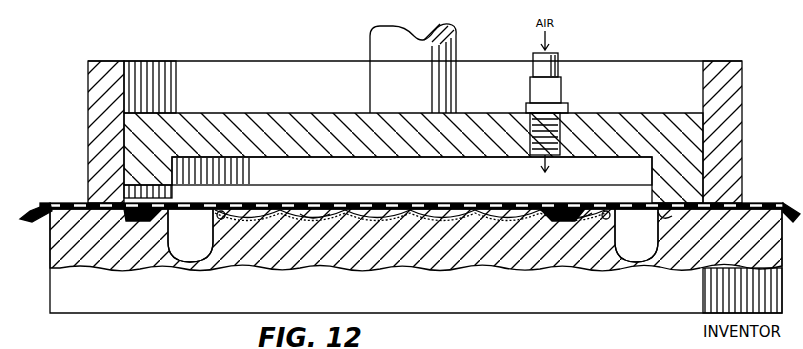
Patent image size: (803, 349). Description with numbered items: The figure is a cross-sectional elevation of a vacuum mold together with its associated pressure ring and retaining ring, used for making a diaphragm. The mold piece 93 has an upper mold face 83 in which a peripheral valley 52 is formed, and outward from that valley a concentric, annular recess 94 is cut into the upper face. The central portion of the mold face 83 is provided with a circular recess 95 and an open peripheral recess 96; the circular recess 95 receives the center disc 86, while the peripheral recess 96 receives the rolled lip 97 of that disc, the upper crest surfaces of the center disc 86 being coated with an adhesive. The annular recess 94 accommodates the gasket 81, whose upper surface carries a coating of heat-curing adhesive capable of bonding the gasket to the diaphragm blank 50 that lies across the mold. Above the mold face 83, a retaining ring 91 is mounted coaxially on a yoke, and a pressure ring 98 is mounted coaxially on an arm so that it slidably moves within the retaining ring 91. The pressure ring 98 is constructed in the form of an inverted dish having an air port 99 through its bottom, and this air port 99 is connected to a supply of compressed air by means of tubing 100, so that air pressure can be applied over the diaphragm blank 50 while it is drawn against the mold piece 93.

The retaining ring 91 is at (88, 118).
The diaphragm blank 50 is at (78, 202).
The tubing 100 is at (561, 100).
The pressure ring 98 is at (622, 120).
The air port 99 is at (555, 165).
The mold face 83 is at (249, 218).
The center disc 86 is at (328, 216).
The circular recess 95 is at (416, 218).
The open peripheral recess 96 is at (601, 221).
The rolled lip 97 is at (611, 215).
The annular recess 94 is at (662, 216).
The gasket 81 is at (704, 215).
The peripheral valley 52 is at (196, 262).
The mold piece 93 is at (420, 292).